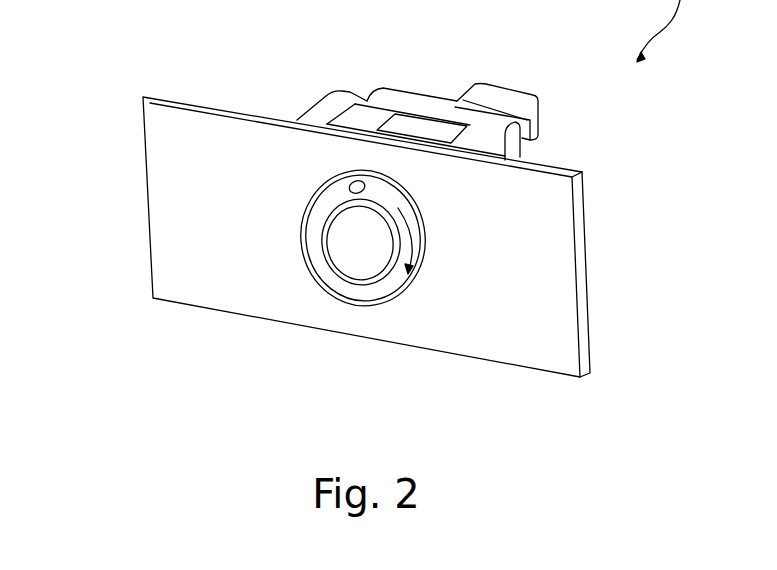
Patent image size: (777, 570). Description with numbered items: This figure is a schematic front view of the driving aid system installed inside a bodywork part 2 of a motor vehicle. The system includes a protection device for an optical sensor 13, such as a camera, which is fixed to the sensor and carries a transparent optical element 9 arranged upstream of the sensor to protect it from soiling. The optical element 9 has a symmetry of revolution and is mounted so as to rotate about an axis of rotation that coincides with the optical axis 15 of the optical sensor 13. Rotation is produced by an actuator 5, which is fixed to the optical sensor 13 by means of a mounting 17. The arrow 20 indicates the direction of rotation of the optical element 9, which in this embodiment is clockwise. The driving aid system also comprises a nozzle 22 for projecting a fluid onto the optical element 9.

The bodywork part 2 is at (164, 273).
The actuator 5 is at (347, 98).
The optical element 9 is at (373, 276).
The optical sensor 13 is at (493, 96).
The optical axis 15 is at (360, 243).
The mounting 17 is at (382, 97).
The arrow 20 is at (410, 226).
The nozzle 22 is at (350, 188).